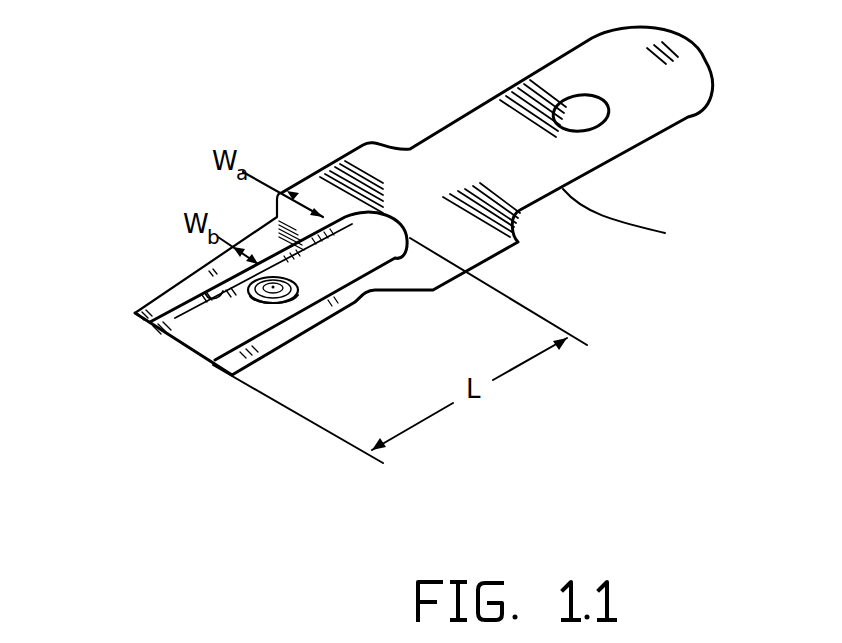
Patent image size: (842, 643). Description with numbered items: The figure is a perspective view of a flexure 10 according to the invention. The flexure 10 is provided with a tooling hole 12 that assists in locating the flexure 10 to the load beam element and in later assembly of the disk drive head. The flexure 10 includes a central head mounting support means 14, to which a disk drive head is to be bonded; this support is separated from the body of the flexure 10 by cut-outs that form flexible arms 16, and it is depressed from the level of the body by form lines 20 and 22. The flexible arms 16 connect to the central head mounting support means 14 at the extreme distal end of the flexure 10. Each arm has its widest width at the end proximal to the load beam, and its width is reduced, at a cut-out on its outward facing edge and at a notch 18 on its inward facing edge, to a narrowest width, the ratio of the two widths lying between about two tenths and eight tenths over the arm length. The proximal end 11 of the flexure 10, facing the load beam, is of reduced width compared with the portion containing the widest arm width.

The flexure 10 is at (495, 291).
The proximal end 11 is at (633, 222).
The tooling hole 12 is at (609, 118).
The central head mounting support means 14 is at (296, 306).
The flexible arms 16 is at (192, 277).
The notch 18 is at (271, 262).
The form line 20 is at (147, 335).
The form line 22 is at (143, 323).